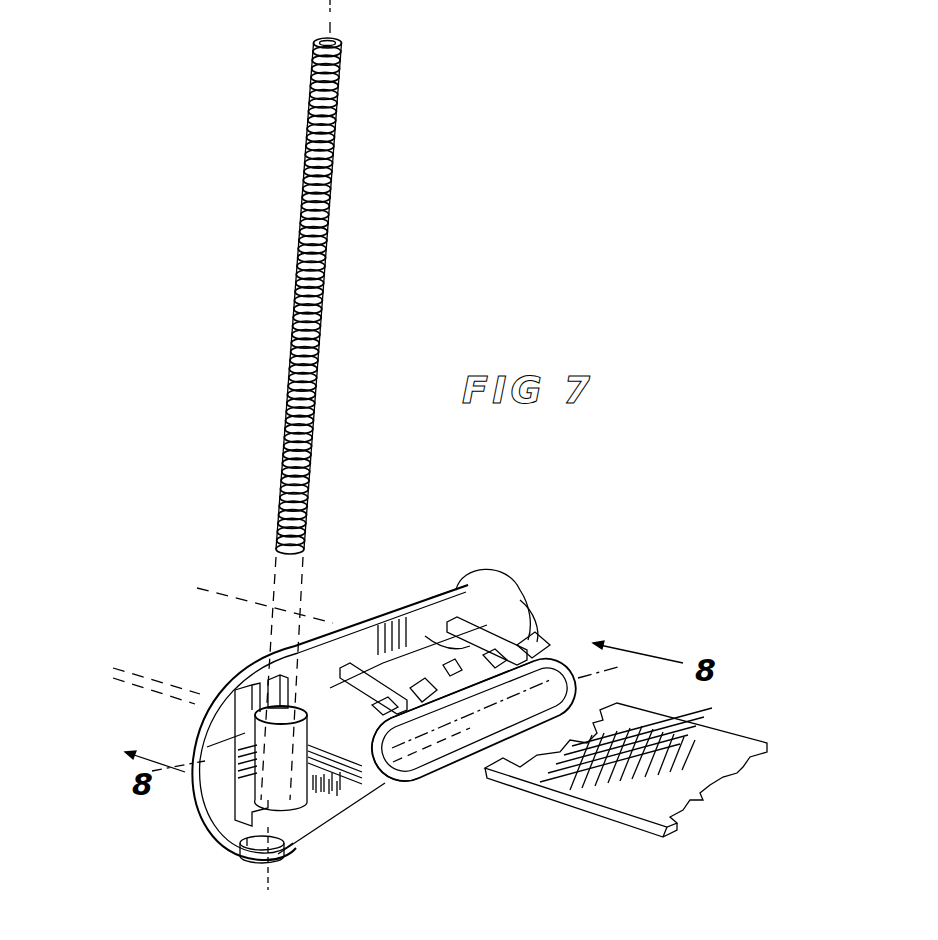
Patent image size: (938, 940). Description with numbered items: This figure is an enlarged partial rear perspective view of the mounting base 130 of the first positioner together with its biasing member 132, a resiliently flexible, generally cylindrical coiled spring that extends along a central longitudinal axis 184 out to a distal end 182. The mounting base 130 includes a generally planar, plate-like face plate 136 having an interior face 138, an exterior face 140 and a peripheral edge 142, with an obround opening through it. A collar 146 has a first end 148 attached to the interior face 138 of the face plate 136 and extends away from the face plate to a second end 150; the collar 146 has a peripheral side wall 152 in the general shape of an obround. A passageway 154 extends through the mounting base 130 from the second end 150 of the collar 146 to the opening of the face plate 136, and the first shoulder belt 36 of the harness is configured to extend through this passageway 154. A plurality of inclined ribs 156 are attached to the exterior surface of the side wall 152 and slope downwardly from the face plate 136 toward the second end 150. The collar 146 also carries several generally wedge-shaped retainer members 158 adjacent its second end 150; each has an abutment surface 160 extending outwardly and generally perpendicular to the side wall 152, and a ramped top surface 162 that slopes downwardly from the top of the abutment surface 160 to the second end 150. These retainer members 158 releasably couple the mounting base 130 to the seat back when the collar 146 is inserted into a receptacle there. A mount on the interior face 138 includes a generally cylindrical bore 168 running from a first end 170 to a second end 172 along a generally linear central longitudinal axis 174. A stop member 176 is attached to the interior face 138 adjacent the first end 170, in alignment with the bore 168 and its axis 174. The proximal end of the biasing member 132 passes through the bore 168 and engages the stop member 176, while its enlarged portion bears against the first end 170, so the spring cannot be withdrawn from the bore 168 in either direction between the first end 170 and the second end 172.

The first shoulder belt 36 is at (727, 742).
The mounting base 130 is at (527, 577).
The biasing member 132 is at (276, 356).
The face plate 136 is at (506, 570).
The interior face 138 is at (478, 594).
The exterior face 140 is at (445, 640).
The peripheral edge 142 is at (517, 600).
The collar 146 is at (588, 690).
The first end 148 is at (412, 647).
The second end 150 is at (565, 655).
The peripheral side wall 152 is at (363, 765).
The passageway 154 is at (503, 730).
The inclined ribs 156 is at (433, 640).
The retainer members 158 is at (545, 620).
The abutment surface 160 is at (430, 650).
The ramped top surface 162 is at (540, 640).
The bore 168 is at (197, 818).
The first end 170 is at (277, 835).
The second end 172 is at (268, 698).
The central longitudinal axis 174 is at (267, 873).
The stop member 176 is at (247, 842).
The distal end 182 is at (322, 44).
The central longitudinal axis 184 is at (331, 23).